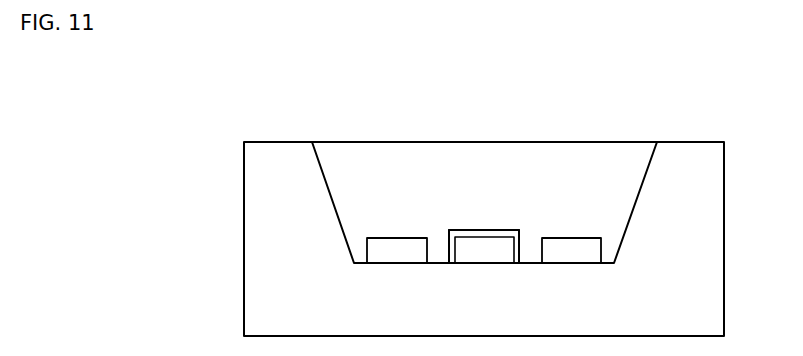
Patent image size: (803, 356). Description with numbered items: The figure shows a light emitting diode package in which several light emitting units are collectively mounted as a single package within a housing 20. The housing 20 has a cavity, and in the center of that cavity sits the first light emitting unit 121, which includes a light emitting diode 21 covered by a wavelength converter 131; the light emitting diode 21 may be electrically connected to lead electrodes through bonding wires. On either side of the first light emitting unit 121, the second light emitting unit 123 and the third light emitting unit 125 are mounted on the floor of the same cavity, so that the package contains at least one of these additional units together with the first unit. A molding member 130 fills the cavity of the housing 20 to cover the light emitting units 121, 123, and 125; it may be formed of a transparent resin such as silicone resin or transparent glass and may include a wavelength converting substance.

The housing 20 is at (705, 278).
The molding member 130 is at (618, 185).
The first light emitting unit 121 is at (522, 93).
The light emitting diode 21 is at (473, 245).
The wavelength converter 131 is at (502, 240).
The second light emitting unit 123 is at (397, 245).
The third light emitting unit 125 is at (573, 243).